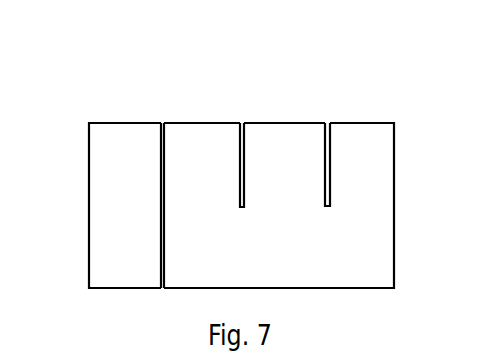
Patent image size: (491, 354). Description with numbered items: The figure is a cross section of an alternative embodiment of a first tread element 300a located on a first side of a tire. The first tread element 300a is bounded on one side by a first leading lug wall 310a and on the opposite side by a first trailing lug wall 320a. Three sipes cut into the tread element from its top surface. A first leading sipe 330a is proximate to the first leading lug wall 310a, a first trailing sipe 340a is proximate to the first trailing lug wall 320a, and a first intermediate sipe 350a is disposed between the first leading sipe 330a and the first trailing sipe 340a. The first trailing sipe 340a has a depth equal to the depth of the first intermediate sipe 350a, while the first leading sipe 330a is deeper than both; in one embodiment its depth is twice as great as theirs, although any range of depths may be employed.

The first tread element 300a is at (336, 266).
The first leading lug wall 310a is at (84, 156).
The first trailing lug wall 320a is at (390, 160).
The first leading sipe 330a is at (163, 121).
The first trailing sipe 340a is at (328, 122).
The first intermediate sipe 350a is at (245, 122).